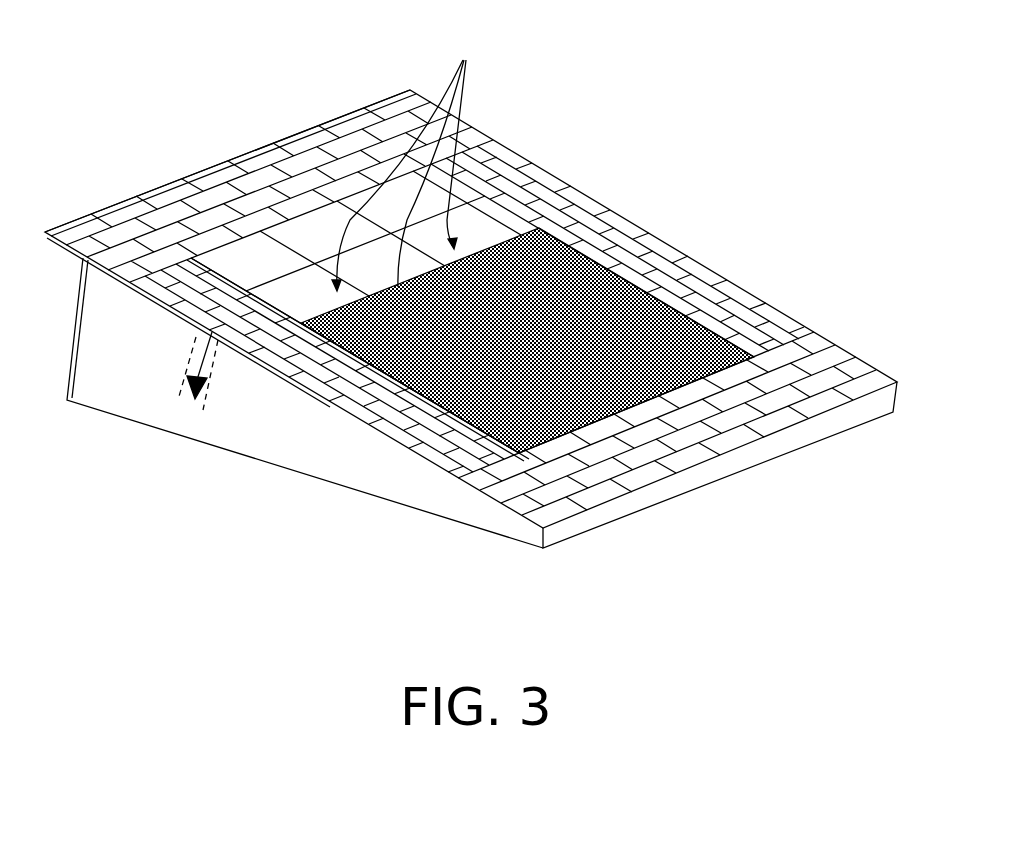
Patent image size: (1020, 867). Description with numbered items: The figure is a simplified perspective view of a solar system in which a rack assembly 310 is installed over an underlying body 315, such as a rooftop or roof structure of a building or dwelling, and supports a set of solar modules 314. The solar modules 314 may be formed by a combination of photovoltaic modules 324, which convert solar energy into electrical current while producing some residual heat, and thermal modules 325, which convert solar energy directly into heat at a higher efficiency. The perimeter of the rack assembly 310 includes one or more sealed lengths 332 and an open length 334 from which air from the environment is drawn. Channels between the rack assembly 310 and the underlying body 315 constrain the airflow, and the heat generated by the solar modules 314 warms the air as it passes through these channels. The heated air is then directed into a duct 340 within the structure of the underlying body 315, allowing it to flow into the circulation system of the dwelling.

The rack assembly 310 is at (832, 323).
The solar modules 314 is at (409, 158).
The underlying body 315 is at (850, 362).
The photovoltaic modules 324 is at (157, 189).
The thermal modules 325 is at (307, 232).
The sealed lengths 332 is at (388, 407).
The open length 334 is at (683, 400).
The duct 340 is at (190, 362).